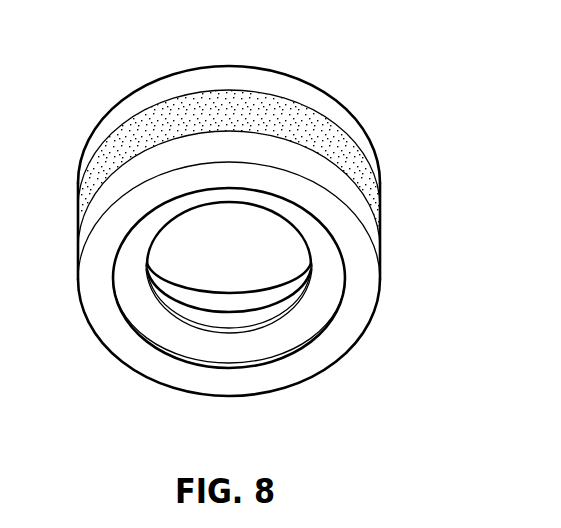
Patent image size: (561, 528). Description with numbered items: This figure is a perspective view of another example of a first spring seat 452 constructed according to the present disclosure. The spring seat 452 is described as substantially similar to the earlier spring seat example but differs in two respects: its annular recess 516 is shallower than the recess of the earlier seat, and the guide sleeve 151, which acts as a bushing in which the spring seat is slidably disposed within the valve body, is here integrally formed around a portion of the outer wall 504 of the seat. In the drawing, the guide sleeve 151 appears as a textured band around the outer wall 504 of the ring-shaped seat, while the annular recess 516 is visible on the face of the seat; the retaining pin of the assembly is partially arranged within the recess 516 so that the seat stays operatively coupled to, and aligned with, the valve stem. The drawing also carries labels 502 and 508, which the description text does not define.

The guide sleeve 151 is at (302, 123).
The first spring seat 452 is at (274, 220).
The outer wall 504 is at (367, 220).
The inner lip 508 is at (297, 308).
The annular recess 516 is at (278, 345).
The central opening 502 is at (213, 270).